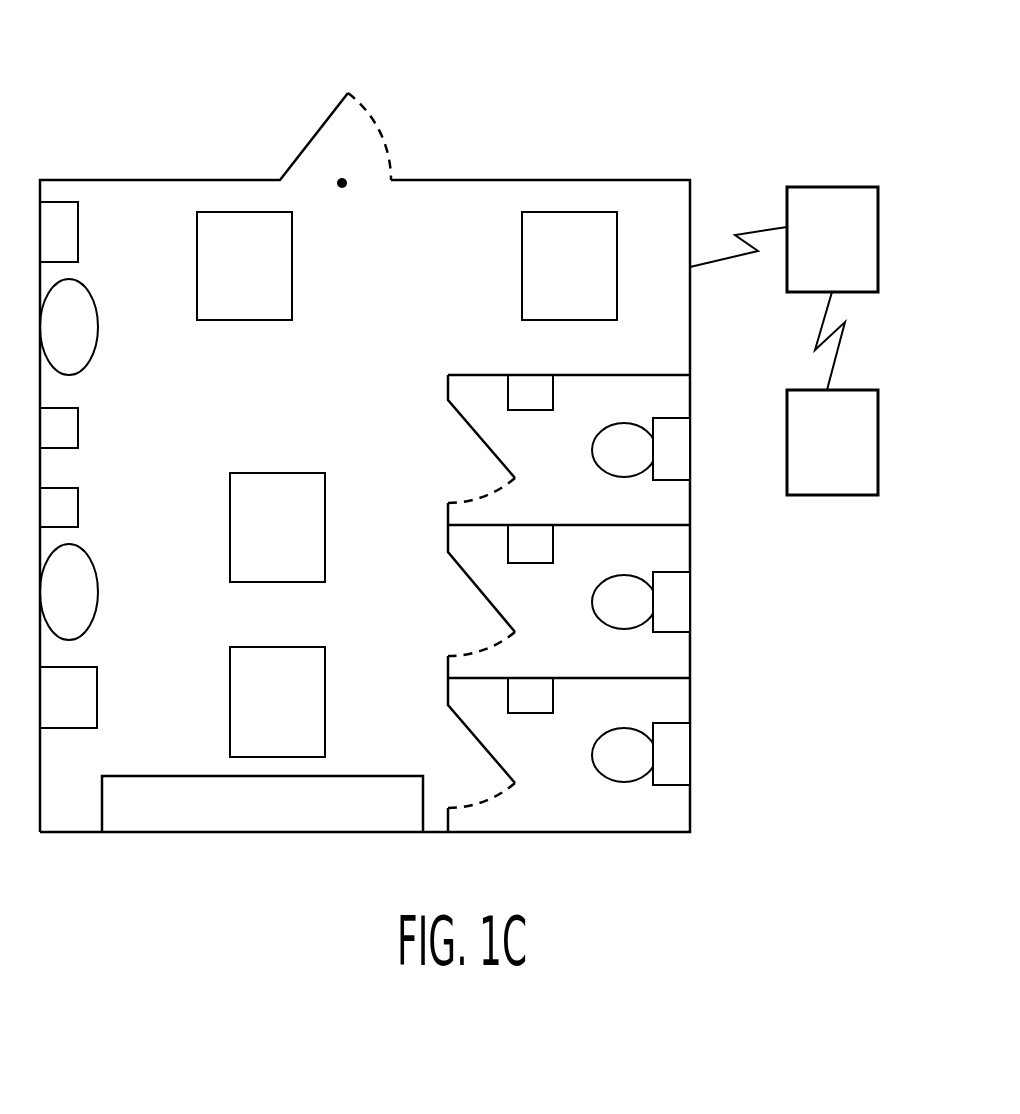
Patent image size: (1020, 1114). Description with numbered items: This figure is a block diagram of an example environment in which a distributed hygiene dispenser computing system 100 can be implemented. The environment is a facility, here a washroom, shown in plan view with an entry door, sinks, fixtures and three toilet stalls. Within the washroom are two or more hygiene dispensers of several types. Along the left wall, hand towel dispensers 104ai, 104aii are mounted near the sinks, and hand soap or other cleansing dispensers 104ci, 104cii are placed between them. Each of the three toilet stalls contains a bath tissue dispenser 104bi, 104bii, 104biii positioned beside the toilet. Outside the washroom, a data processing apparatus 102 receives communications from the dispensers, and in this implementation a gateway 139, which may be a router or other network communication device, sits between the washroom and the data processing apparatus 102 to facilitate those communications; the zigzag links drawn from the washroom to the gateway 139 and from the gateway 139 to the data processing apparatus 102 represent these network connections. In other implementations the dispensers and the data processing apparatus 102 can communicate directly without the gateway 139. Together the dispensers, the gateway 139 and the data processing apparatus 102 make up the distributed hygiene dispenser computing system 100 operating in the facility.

The distributed hygiene dispenser computing system 100 is at (595, 131).
The data processing apparatus 102 is at (850, 459).
The gateway 139 is at (851, 187).
The hand towel dispenser 104aii is at (78, 242).
The hand towel dispenser 104ai is at (97, 697).
The hand soap dispenser 104cii is at (78, 437).
The hand soap dispenser 104ci is at (78, 503).
The bath tissue dispenser 104bi is at (530, 410).
The bath tissue dispenser 104bii is at (530, 563).
The bath tissue dispenser 104biii is at (530, 713).